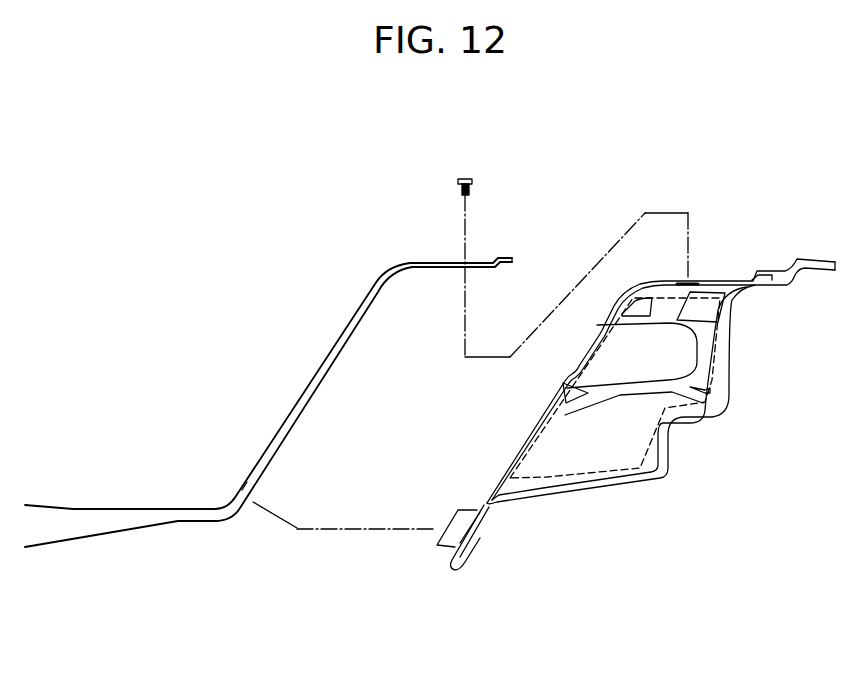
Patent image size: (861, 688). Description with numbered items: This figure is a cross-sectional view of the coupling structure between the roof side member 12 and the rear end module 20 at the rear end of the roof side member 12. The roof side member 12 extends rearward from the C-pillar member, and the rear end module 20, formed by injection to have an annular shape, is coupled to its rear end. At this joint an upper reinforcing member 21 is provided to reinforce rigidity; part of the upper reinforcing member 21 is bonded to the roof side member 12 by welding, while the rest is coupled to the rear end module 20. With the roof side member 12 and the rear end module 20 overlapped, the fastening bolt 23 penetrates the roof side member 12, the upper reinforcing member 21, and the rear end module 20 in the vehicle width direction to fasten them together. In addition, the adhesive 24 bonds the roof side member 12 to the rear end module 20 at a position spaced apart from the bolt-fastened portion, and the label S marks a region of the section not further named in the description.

The roof side member 12 is at (303, 393).
The rear end module 20 is at (717, 413).
The upper reinforcing member 21 is at (513, 457).
The fastening bolt 23 is at (471, 178).
The adhesive 24 is at (437, 542).
The space S is at (548, 483).